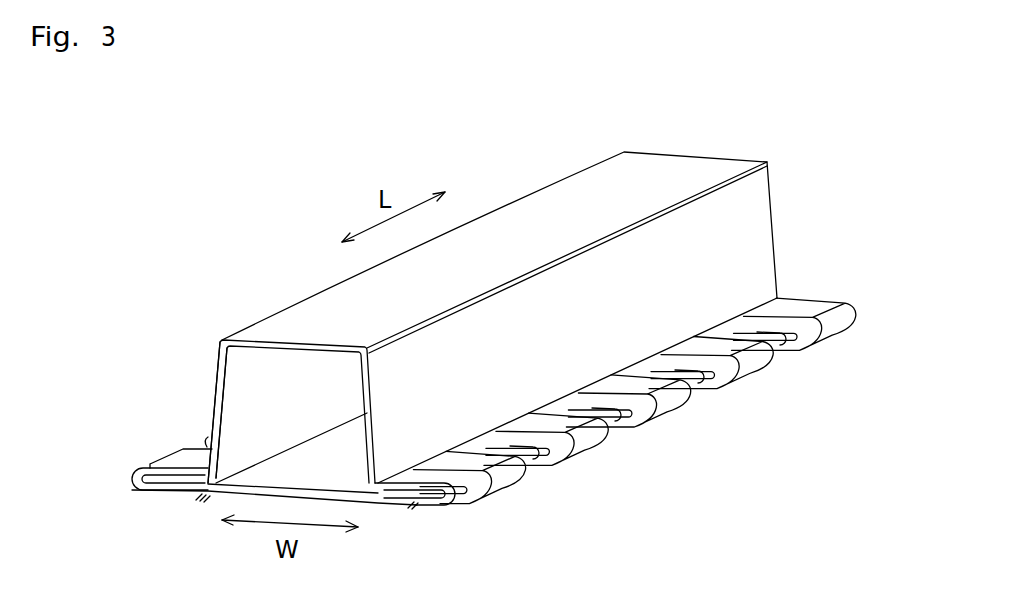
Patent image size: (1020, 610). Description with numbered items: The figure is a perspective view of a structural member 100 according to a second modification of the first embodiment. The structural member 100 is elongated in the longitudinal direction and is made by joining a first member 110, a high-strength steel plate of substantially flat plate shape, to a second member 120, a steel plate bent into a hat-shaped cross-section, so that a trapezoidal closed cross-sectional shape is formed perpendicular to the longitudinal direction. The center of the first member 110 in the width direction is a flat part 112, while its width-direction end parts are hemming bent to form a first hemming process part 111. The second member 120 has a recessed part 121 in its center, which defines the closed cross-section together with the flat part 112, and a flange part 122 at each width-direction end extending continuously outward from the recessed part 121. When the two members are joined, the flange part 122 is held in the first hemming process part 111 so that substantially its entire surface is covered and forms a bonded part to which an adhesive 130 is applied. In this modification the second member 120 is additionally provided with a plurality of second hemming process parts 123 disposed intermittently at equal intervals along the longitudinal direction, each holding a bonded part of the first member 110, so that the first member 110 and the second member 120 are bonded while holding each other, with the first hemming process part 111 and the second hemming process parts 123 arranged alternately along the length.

The structural member 100 is at (763, 151).
The first member 110 is at (197, 502).
The first hemming process part 111 is at (153, 458).
The flat part 112 is at (308, 467).
The second member 120 is at (312, 315).
The recessed part 121 is at (210, 418).
The flange part 122 is at (160, 482).
The second hemming process part 123 is at (527, 473).
The adhesive 130 is at (180, 487).